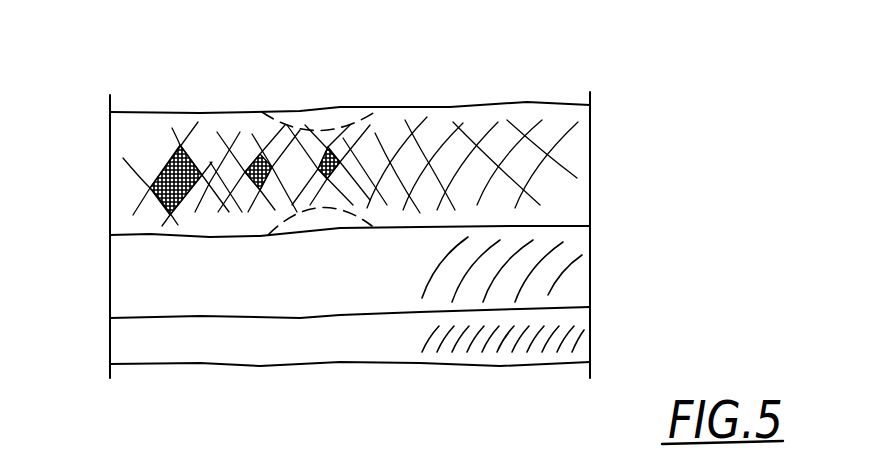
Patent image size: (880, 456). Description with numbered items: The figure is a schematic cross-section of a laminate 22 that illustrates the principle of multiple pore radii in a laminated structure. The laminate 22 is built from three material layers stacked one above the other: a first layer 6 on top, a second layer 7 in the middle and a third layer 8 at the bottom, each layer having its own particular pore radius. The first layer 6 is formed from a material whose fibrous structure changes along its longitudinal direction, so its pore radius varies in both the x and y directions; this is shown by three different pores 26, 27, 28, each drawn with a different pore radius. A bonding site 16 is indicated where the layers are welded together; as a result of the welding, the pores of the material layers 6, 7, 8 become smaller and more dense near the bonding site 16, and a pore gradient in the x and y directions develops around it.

The laminate 22 is at (534, 85).
The first layer 6 is at (122, 192).
The second layer 7 is at (128, 284).
The third layer 8 is at (125, 347).
The pore 26 is at (157, 163).
The pore 27 is at (255, 150).
The pore 28 is at (376, 130).
The bonding site 16 is at (317, 125).